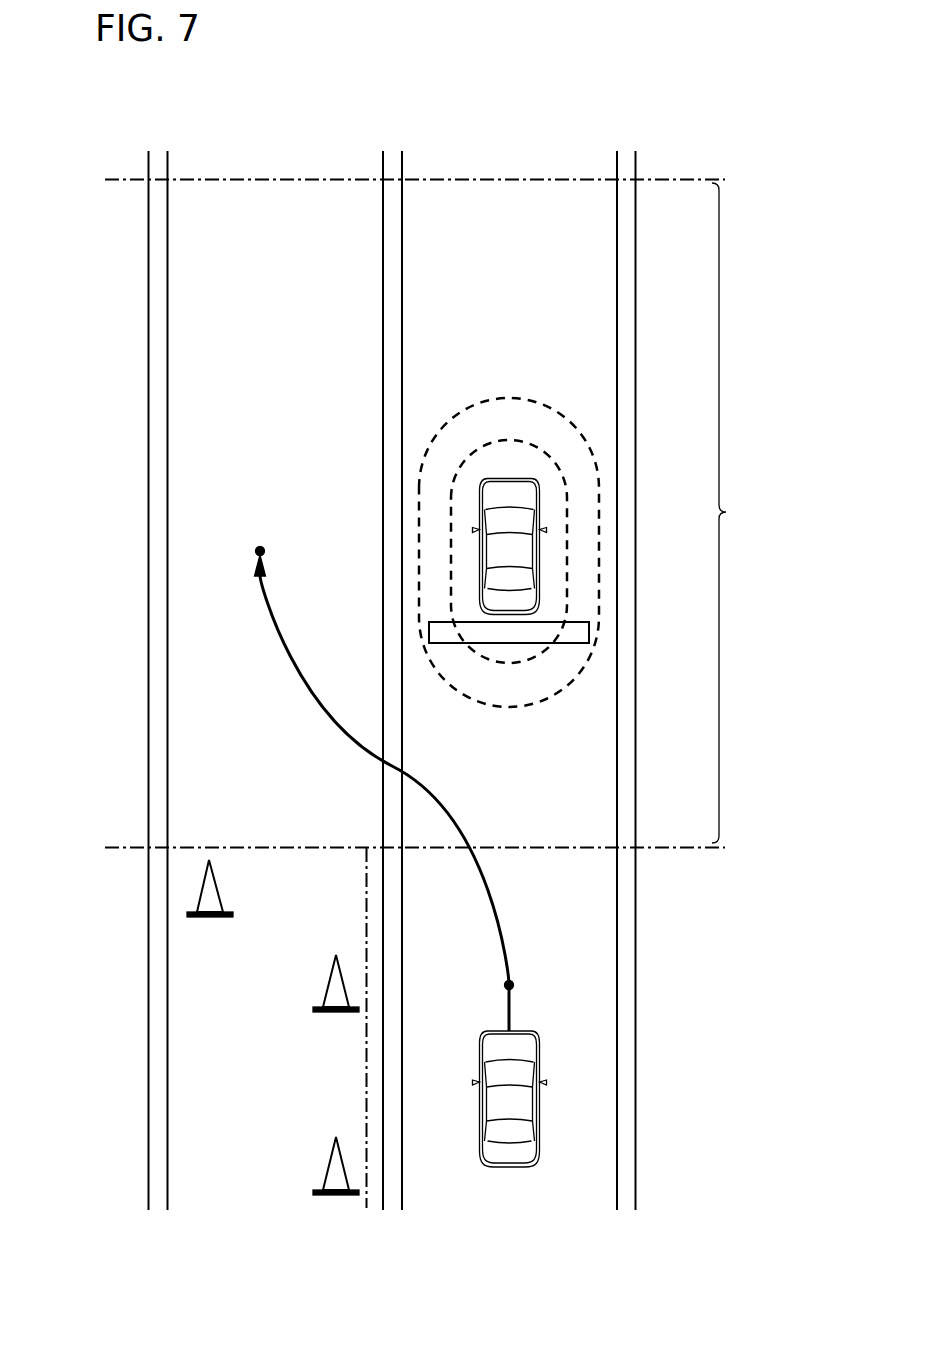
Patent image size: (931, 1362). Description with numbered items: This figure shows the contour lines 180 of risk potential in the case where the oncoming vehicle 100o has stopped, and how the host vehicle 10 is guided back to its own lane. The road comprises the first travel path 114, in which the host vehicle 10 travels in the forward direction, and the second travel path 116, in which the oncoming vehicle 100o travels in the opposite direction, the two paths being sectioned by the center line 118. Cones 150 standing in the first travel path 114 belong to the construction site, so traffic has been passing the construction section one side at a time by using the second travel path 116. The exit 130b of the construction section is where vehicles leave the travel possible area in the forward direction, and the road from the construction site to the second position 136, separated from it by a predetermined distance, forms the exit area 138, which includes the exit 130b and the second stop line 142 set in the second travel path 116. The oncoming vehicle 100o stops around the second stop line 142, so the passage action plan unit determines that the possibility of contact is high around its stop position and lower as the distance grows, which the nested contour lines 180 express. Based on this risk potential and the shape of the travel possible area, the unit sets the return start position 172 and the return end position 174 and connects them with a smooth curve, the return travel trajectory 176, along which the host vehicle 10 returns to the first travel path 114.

The host vehicle 10 is at (542, 1106).
The oncoming vehicle 100o is at (486, 523).
The first travel path 114 is at (382, 128).
The second travel path 116 is at (617, 128).
The center line 118 is at (391, 162).
The exit of the construction section 130b is at (522, 839).
The second position 136 is at (716, 181).
The exit area 138 is at (741, 513).
The second stop line 142 is at (578, 633).
The cones 150 is at (209, 920).
The return start position 172 is at (511, 980).
The return end position 174 is at (261, 545).
The return travel trajectory 176 is at (306, 704).
The contour lines of risk potential 180 is at (523, 397).